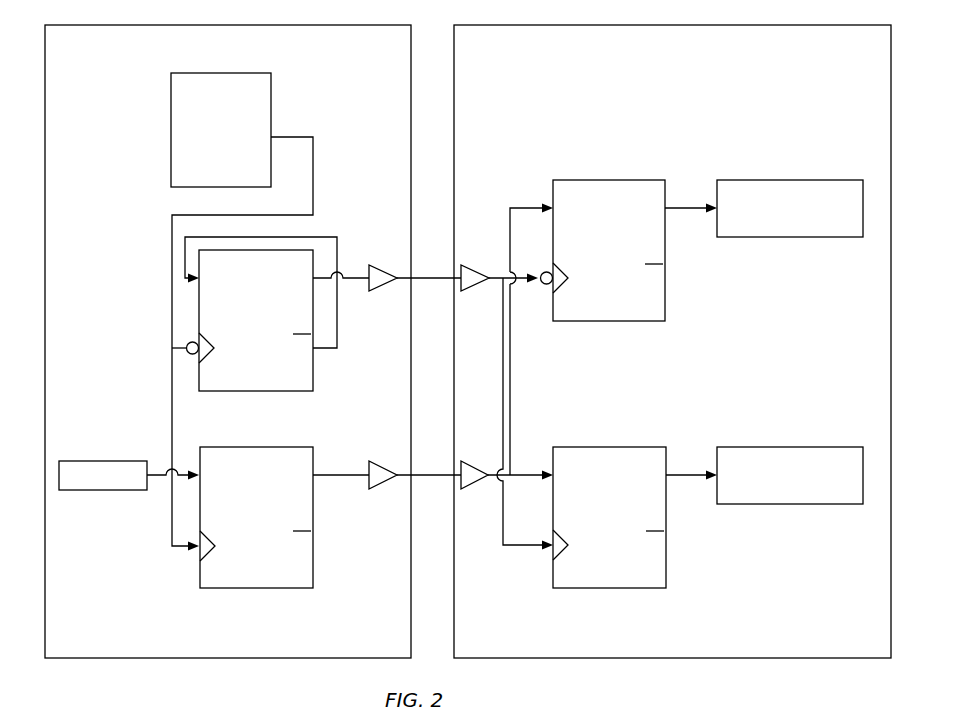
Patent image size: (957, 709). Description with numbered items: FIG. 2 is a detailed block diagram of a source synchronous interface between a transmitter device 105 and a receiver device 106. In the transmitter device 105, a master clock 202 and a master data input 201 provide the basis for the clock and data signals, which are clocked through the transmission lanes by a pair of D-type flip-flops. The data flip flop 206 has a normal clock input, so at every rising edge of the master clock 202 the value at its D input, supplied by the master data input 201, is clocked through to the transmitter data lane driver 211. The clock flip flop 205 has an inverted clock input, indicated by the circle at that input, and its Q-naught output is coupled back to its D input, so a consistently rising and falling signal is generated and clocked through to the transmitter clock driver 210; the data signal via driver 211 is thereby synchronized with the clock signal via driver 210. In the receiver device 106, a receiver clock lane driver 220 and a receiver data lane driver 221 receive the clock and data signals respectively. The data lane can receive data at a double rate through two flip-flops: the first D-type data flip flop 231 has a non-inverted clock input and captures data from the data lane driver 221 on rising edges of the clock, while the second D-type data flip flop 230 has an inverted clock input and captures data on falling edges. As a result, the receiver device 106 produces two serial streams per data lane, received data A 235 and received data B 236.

The transmitter device 105 is at (408, 56).
The receiver device 106 is at (668, 56).
The master data input 201 is at (127, 497).
The master clock 202 is at (160, 122).
The clock flip flop 205 is at (324, 379).
The data flip flop 206 is at (324, 572).
The transmitter clock driver 210 is at (385, 292).
The transmitter data lane driver 211 is at (383, 494).
The receiver clock lane driver 220 is at (474, 296).
The receiver data lane driver 221 is at (473, 496).
The second D-type data flip flop 230 is at (680, 307).
The first D-type data flip flop 231 is at (682, 561).
The received data A 235 is at (787, 246).
The received data B 236 is at (782, 513).